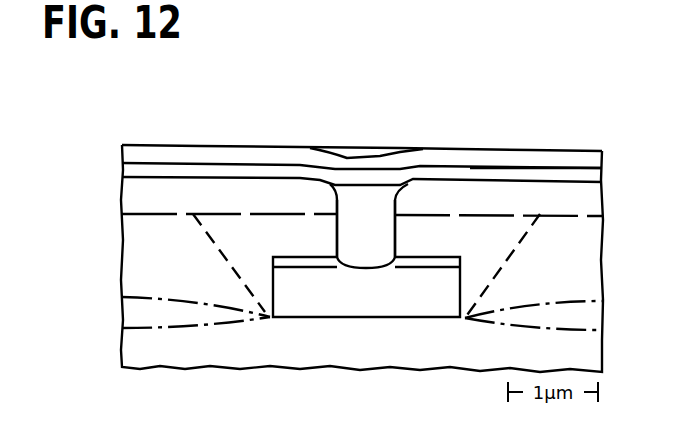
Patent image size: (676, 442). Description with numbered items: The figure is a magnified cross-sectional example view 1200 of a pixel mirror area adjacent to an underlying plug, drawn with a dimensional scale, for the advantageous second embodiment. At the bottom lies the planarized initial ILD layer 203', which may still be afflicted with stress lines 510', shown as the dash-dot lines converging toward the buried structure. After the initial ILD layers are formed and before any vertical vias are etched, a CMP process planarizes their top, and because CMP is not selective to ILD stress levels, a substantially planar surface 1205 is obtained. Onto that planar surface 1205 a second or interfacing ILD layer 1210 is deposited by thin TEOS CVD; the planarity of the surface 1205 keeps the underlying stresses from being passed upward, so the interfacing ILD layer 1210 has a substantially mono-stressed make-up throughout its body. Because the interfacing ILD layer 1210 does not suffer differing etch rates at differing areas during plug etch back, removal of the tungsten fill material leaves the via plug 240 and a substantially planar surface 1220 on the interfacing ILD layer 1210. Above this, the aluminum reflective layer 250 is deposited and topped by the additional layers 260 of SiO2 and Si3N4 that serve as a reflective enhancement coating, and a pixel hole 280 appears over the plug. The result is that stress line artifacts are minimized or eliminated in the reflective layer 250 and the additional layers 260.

The additional layers 260 is at (148, 152).
The substantially planar surface 1220 is at (165, 170).
The interfacing ILD layer 1210 is at (220, 193).
The planarized initial ILD layer 203' is at (362, 201).
The example view 1200 is at (402, 97).
The pixel hole 280 is at (375, 145).
The planar surface 1205 is at (432, 215).
The via plug 240 is at (398, 236).
The reflective layer 250 is at (518, 175).
The stress lines 510' is at (535, 206).